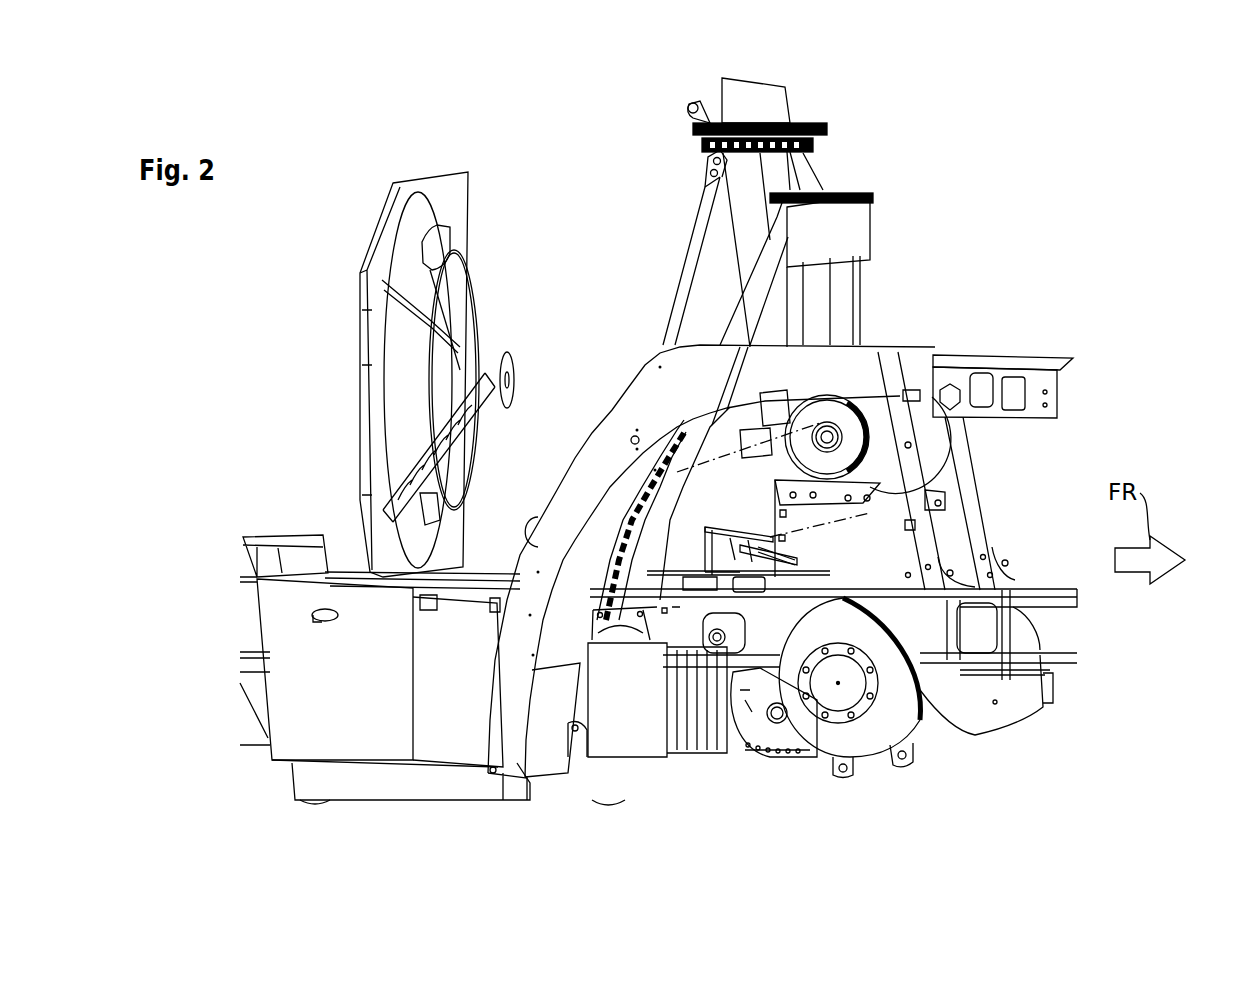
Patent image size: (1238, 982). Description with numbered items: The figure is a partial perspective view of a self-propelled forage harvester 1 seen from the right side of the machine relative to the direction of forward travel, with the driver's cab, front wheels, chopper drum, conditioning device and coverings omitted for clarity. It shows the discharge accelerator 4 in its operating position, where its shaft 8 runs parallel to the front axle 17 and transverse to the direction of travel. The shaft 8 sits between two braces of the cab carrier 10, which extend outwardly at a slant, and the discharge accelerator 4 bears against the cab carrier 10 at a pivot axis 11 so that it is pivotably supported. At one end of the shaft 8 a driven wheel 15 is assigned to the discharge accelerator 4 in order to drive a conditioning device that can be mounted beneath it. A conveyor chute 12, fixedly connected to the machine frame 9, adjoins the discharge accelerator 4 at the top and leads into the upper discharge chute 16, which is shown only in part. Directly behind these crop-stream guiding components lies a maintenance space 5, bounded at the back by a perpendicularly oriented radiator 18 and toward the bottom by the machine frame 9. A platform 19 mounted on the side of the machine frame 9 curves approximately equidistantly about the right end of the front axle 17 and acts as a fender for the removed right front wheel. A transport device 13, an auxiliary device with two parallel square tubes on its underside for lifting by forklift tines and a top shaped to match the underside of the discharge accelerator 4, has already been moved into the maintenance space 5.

The forage harvester 1 is at (550, 152).
The discharge accelerator 4 is at (950, 430).
The maintenance space 5 is at (537, 249).
The shaft 8 is at (723, 457).
The machine frame 9 is at (927, 643).
The cab carrier 10 is at (890, 420).
The pivot axis 11 is at (865, 510).
The conveyor chute 12 is at (735, 238).
The transport device 13 is at (713, 560).
The driven wheel 15 is at (850, 410).
The upper discharge chute 16 is at (762, 93).
The front axle 17 is at (870, 747).
The radiator 18 is at (358, 315).
The platform 19 is at (652, 390).